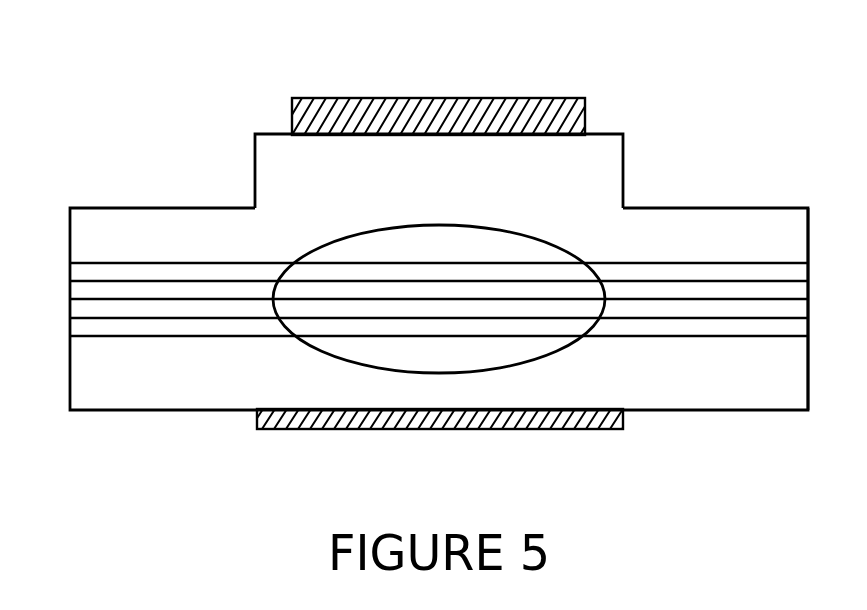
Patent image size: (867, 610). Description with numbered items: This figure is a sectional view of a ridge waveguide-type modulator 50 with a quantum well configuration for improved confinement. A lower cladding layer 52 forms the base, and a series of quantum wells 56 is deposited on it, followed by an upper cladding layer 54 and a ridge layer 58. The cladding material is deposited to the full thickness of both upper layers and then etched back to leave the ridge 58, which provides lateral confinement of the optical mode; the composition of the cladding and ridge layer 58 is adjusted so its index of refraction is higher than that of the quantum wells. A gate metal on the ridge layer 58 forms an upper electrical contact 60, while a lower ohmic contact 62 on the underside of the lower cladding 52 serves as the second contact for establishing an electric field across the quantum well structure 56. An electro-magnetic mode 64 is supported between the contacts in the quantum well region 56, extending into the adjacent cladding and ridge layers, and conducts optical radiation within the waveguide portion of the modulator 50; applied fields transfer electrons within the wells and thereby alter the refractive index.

The modulator 50 is at (668, 166).
The lower cladding layer 52 is at (808, 382).
The upper cladding layer 54 is at (808, 238).
The quantum wells 56 is at (65, 262).
The ridge layer 58 is at (623, 170).
The upper electrical contact 60 is at (433, 110).
The lower ohmic contact 62 is at (473, 429).
The electro-magnetic mode 64 is at (298, 340).